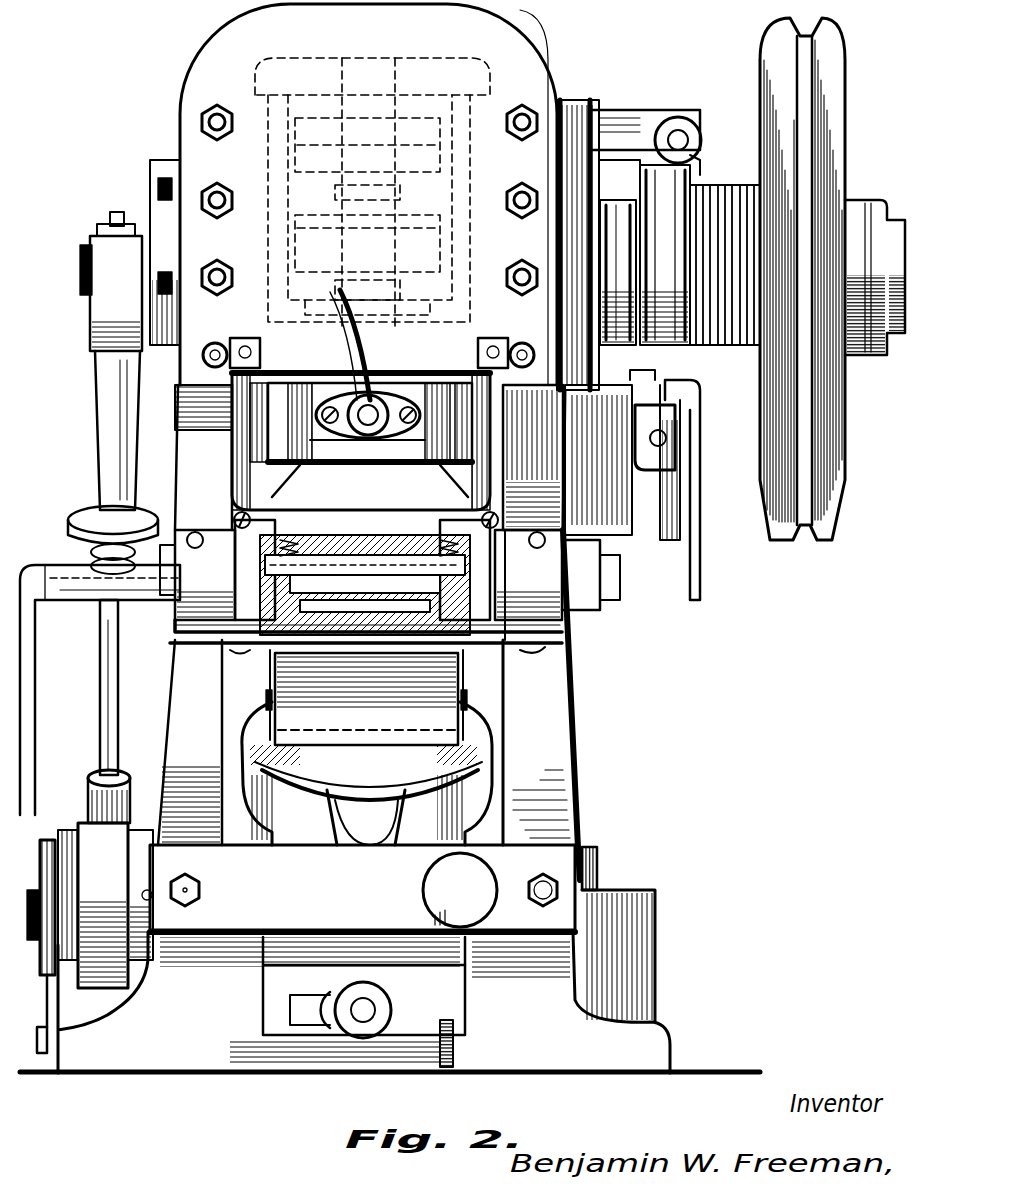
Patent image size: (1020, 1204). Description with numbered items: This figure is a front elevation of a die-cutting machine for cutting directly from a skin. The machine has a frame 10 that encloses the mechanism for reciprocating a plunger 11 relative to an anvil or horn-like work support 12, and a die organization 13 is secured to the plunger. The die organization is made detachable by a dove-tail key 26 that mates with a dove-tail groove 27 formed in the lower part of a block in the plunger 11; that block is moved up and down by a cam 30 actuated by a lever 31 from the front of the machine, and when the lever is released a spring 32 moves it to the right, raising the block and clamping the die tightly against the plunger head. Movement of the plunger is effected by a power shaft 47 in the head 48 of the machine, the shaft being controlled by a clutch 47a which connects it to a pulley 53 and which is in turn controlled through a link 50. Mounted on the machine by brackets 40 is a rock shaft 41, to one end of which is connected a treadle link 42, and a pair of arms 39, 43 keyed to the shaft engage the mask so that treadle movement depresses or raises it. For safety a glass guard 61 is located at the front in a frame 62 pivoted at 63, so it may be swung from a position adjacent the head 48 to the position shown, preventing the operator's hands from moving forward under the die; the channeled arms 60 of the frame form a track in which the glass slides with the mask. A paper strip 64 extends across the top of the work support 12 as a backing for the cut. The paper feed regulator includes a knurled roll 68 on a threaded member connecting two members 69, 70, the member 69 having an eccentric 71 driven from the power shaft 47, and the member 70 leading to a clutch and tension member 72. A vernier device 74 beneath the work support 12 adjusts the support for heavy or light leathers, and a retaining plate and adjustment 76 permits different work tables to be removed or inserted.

The frame 10 is at (560, 700).
The plunger 11 is at (290, 418).
The work support 12 is at (465, 668).
The die organization 13 is at (332, 441).
The dove-tail key 26 is at (420, 410).
The dove-tail groove 27 is at (300, 440).
The cam 30 is at (395, 383).
The lever 31 is at (345, 290).
The spring 32 is at (340, 330).
The arm 39 is at (230, 652).
The bracket 40 is at (610, 625).
The rock shaft 41 is at (172, 595).
The treadle link 42 is at (30, 700).
The arm 43 is at (560, 645).
The power shaft 47 is at (645, 225).
The clutch 47a is at (672, 215).
The head 48 is at (374, 197).
The link 50 is at (702, 560).
The pulley 53 is at (762, 68).
The arm 60 is at (240, 560).
The glass guard 61 is at (388, 632).
The frame 62 is at (492, 480).
The pivot 63 is at (368, 332).
The paper strip 64 is at (455, 722).
The knurled roll 68 is at (80, 515).
The member 69 is at (100, 402).
The member 70 is at (108, 752).
The eccentric 71 is at (97, 315).
The clutch and tension member 72 is at (90, 938).
The vernier device 74 is at (285, 1003).
The retaining plate and adjustment 76 is at (440, 887).